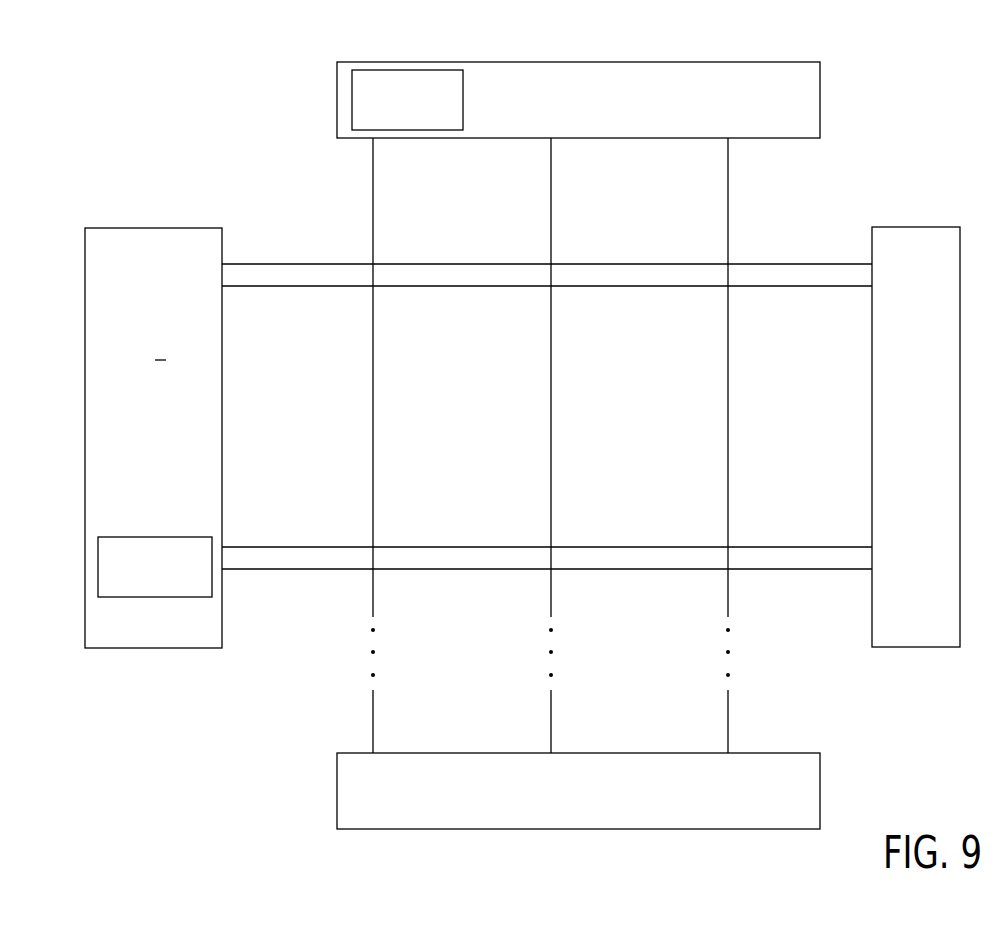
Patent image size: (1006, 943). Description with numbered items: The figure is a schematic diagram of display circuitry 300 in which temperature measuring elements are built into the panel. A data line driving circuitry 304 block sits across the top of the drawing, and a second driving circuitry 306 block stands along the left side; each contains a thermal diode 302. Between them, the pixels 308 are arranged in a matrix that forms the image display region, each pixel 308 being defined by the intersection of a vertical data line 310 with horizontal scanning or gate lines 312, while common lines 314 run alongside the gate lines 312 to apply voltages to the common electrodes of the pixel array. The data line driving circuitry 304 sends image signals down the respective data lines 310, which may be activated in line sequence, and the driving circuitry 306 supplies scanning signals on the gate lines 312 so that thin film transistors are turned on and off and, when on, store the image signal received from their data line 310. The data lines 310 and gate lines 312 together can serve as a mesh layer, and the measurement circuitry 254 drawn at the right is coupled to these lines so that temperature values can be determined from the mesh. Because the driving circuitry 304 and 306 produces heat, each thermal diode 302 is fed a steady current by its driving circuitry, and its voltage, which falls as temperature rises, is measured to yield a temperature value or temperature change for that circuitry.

The display circuitry 300 is at (210, 52).
The thermal diode 302 is at (412, 70).
The data line driving circuitry 304 is at (698, 62).
The driving circuitry 306 is at (198, 228).
The pixel 308 is at (397, 196).
The data line 310 is at (373, 713).
The gate line 312 is at (765, 286).
The common line 314 is at (752, 264).
The measurement circuitry 254 is at (922, 227).